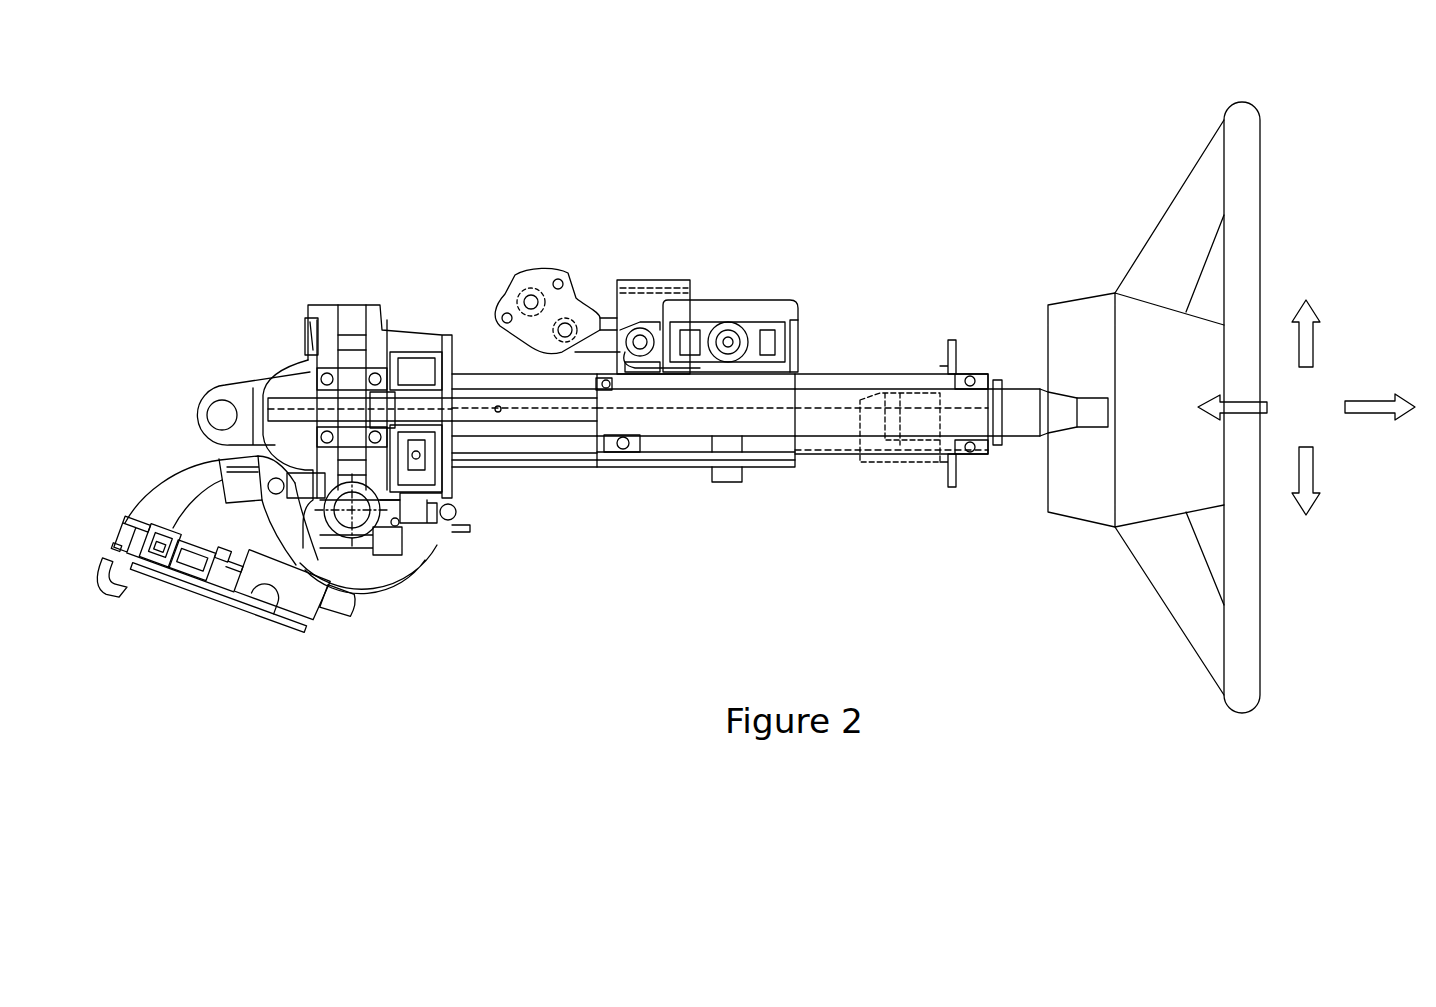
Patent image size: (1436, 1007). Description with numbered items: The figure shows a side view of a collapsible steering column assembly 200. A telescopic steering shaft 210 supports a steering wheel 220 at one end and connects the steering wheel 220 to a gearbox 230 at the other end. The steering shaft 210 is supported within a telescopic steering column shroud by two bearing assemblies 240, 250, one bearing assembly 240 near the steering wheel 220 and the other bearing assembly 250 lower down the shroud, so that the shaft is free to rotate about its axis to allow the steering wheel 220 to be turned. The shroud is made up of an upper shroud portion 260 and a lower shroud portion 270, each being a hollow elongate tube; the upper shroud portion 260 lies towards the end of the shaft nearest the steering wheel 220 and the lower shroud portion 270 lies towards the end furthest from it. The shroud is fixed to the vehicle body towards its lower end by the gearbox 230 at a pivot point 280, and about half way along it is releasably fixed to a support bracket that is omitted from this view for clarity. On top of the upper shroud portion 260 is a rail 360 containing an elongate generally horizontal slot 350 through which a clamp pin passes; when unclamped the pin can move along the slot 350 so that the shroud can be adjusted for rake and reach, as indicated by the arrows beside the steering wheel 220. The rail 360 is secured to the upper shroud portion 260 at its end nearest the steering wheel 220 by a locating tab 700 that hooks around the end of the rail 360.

The collapsible steering column assembly 200 is at (558, 622).
The telescopic steering shaft 210 is at (1005, 388).
The steering wheel 220 is at (1245, 188).
The gearbox 230 is at (383, 330).
The bearing assembly 240 is at (968, 456).
The bearing assembly 250 is at (622, 450).
The upper shroud portion 260 is at (848, 374).
The lower shroud portion 270 is at (518, 470).
The pivot point 280 is at (220, 410).
The elongate generally horizontal slot 350 is at (780, 372).
The rail 360 is at (800, 362).
The locating tab 700 is at (825, 372).